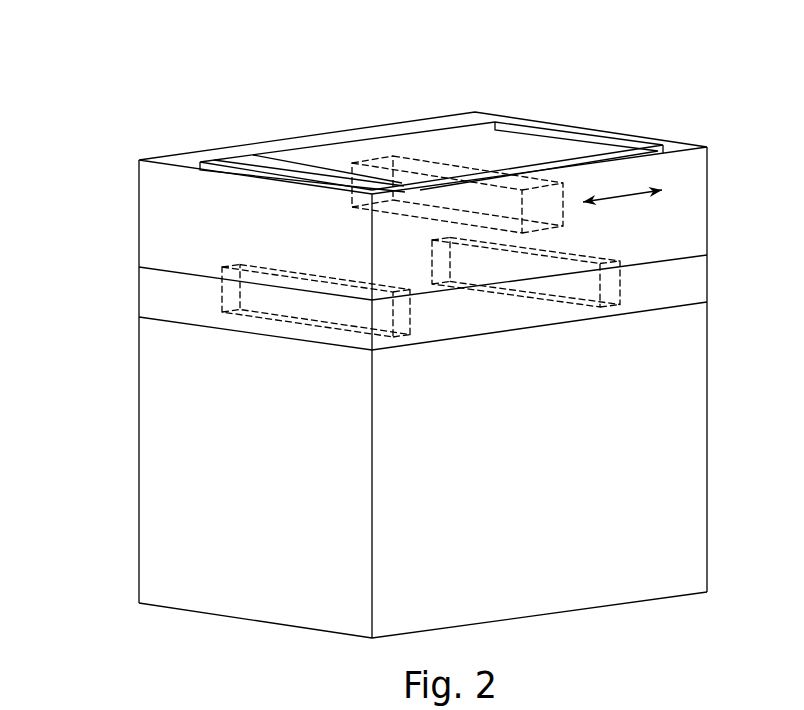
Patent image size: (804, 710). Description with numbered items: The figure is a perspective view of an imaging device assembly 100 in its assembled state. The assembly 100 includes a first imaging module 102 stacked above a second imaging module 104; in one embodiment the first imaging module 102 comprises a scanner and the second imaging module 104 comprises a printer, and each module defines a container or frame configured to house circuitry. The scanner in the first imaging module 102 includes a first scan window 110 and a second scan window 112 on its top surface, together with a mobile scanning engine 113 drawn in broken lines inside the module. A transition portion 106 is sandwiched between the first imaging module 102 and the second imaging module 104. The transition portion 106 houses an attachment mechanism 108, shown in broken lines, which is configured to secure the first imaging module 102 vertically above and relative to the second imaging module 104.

The imaging device assembly 100 is at (130, 95).
The first imaging module 102 is at (162, 218).
The second imaging module 104 is at (162, 387).
The transition portion 106 is at (162, 294).
The attachment mechanism 108 is at (412, 320).
The first scan window 110 is at (369, 141).
The second scan window 112 is at (239, 157).
The mobile scanning engine 113 is at (494, 195).